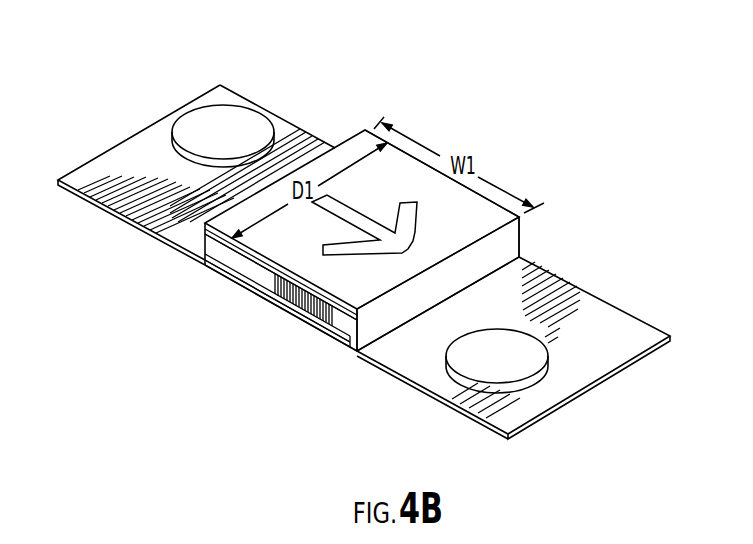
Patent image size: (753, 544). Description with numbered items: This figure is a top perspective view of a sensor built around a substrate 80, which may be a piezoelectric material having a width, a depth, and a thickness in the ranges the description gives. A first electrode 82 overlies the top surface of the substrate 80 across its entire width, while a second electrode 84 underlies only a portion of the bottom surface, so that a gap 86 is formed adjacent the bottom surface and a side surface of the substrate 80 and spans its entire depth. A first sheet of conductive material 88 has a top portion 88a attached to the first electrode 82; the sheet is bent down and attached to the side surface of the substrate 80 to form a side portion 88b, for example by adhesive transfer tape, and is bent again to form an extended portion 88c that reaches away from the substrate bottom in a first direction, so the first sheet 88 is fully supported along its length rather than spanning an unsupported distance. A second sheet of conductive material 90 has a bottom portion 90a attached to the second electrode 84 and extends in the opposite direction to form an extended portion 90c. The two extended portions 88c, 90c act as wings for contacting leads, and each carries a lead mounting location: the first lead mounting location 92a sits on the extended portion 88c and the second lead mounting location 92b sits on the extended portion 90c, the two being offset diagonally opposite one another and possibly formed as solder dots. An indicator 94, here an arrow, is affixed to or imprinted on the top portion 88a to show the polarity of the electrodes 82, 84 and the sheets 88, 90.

The substrate 80 is at (204, 258).
The first electrode 82 is at (240, 262).
The second electrode 84 is at (288, 306).
The gap 86 is at (351, 342).
The first sheet of conductive material 88 is at (420, 185).
The top portion of the first sheet of conductive material 88a is at (430, 150).
The side portion of the first sheet of conductive material 88b is at (512, 243).
The extended portion of the first sheet of conductive material 88c is at (563, 302).
The second sheet of conductive material 90 is at (203, 263).
The bottom portion of the second sheet of conductive material 90a is at (258, 292).
The extended portion of the second sheet of conductive material 90c is at (104, 210).
The first lead mounting location 92a is at (497, 355).
The second lead mounting location 92b is at (195, 123).
The indicator 94 is at (410, 221).